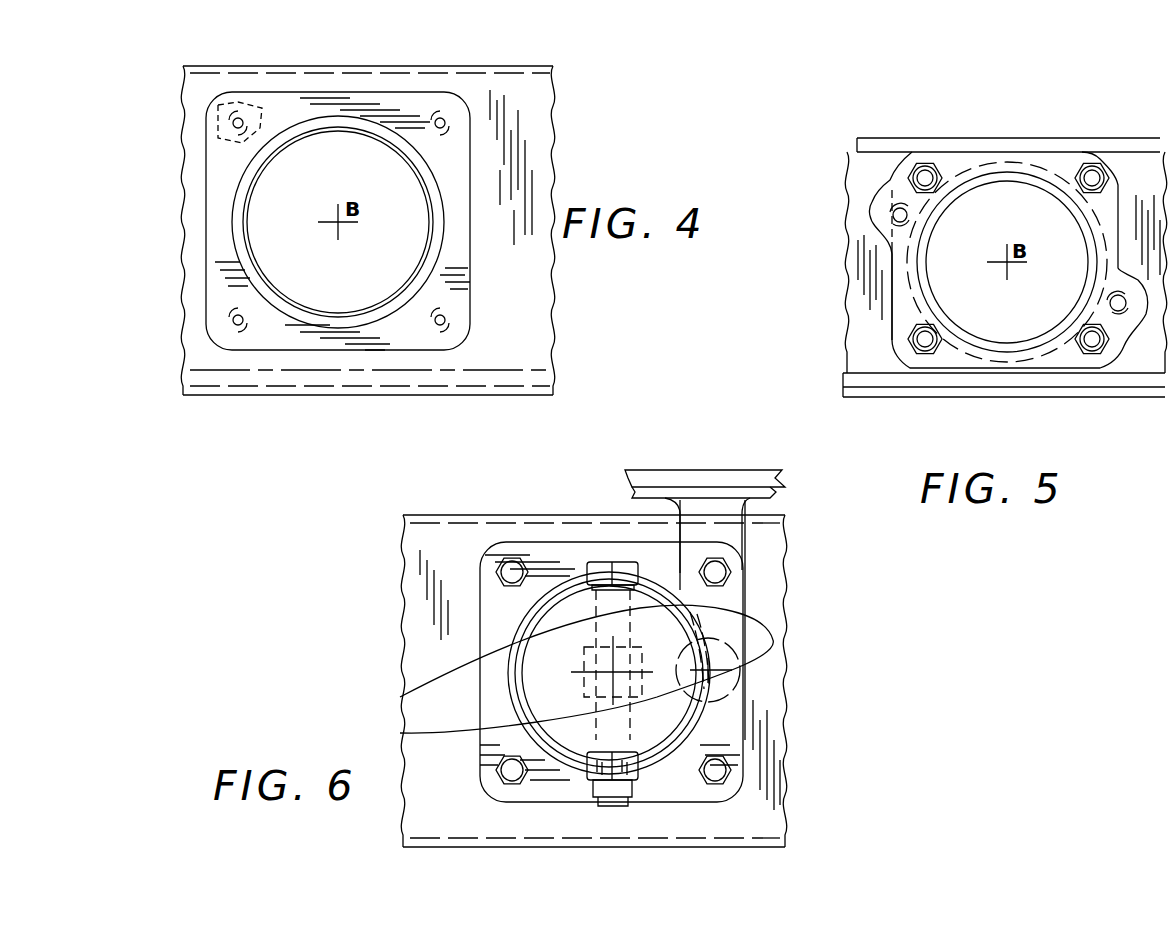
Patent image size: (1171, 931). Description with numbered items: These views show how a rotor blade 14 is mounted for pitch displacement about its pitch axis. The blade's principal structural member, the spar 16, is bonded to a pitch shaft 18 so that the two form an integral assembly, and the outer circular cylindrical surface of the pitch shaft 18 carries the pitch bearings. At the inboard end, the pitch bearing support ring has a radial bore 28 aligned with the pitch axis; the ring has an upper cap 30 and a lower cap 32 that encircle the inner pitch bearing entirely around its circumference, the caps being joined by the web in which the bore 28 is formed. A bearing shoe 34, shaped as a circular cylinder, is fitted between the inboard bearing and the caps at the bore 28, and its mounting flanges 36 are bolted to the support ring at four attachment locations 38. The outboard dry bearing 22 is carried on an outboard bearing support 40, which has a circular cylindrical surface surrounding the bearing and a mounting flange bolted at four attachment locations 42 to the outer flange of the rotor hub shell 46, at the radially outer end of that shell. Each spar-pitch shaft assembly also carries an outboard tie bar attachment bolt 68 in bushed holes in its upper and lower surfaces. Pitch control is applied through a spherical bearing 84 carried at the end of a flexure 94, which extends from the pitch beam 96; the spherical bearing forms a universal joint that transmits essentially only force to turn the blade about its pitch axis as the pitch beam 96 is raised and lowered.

In FIG. 6, the rotor blade 14 is at (430, 687).
In FIG. 5, the spar 16 is at (928, 306).
In FIG. 5, the pitch shaft 18 is at (942, 338).
In FIG. 4, the outboard dry bearing 22 is at (418, 186).
In FIG. 5, the radial bore 28 is at (984, 150).
In FIG. 5, the upper cap 30 is at (901, 140).
In FIG. 5, the lower cap 32 is at (963, 382).
In FIG. 5, the bearing shoe 34 is at (902, 314).
In FIG. 5, the mounting flanges 36 is at (880, 200).
In FIG. 5, the attachment locations 38 is at (928, 170).
In FIG. 4, the outboard bearing support 40 is at (340, 96).
In FIG. 6, the outboard bearing support 40 is at (549, 542).
In FIG. 4, the attachment locations 42 is at (238, 116).
In FIG. 6, the attachment locations 42 is at (508, 566).
In FIG. 4, the rotor hub shell 46 is at (360, 372).
In FIG. 6, the rotor hub shell 46 is at (629, 820).
In FIG. 6, the outboard tie bar attachment bolt 68 is at (603, 562).
In FIG. 6, the spherical bearing 84 is at (773, 682).
In FIG. 6, the flexure 94 is at (740, 520).
In FIG. 6, the pitch beam 96 is at (658, 488).